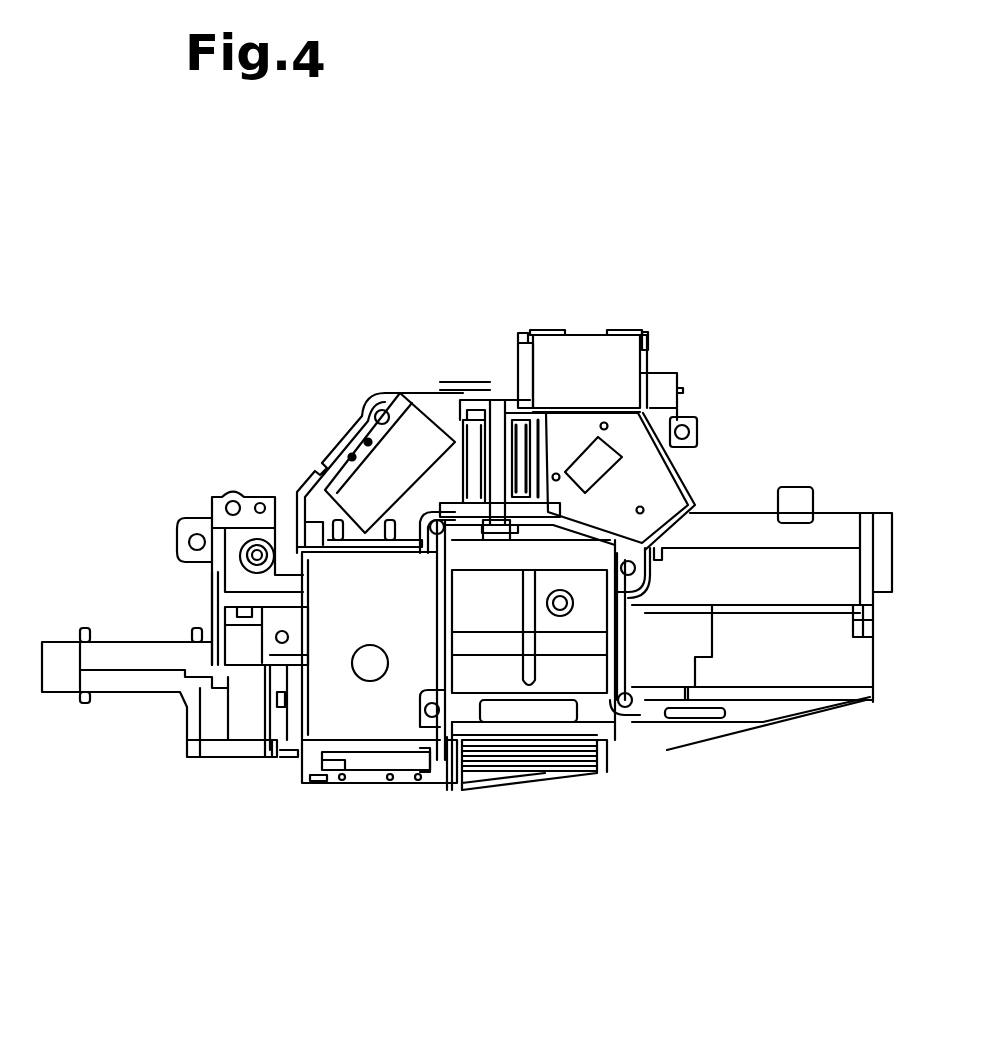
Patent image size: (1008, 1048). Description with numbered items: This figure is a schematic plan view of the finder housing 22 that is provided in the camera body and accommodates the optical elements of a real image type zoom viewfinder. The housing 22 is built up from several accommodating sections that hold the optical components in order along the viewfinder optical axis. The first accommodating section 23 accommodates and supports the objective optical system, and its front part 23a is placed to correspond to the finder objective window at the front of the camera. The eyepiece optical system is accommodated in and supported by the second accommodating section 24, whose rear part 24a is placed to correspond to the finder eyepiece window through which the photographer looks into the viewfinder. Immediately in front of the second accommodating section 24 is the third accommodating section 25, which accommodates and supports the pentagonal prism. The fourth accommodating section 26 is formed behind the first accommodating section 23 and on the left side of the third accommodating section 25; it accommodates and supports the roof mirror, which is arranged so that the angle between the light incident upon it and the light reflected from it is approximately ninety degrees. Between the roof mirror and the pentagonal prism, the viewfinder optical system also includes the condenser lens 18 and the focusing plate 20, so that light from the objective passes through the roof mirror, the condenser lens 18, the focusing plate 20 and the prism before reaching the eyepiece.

The condenser lens 18 is at (463, 400).
The focusing plate 20 is at (443, 413).
The housing 22 is at (557, 803).
The first accommodating section 23 is at (353, 722).
The front part of the first accommodating section 23a is at (317, 783).
The second accommodating section 24 is at (587, 360).
The rear part of the second accommodating section 24a is at (628, 330).
The third accommodating section 25 is at (650, 485).
The fourth accommodating section 26 is at (412, 498).